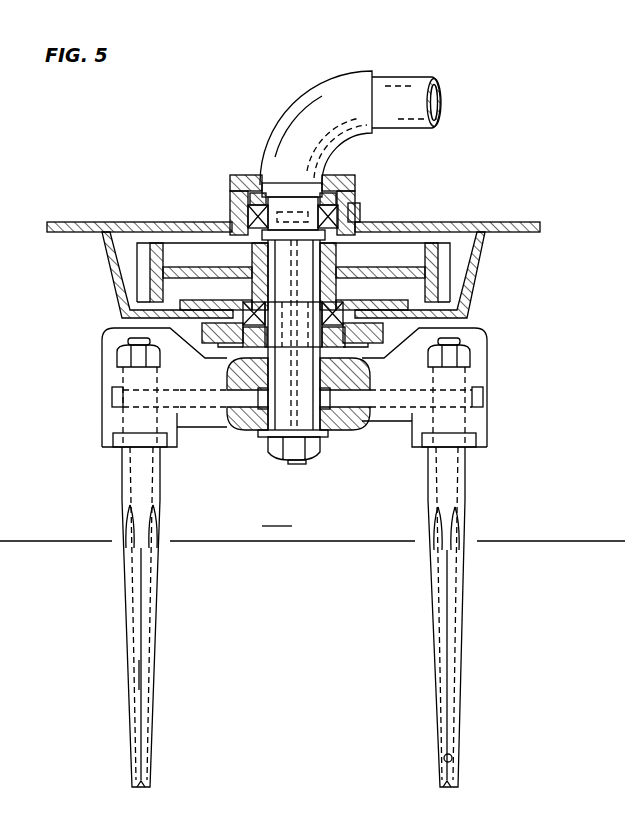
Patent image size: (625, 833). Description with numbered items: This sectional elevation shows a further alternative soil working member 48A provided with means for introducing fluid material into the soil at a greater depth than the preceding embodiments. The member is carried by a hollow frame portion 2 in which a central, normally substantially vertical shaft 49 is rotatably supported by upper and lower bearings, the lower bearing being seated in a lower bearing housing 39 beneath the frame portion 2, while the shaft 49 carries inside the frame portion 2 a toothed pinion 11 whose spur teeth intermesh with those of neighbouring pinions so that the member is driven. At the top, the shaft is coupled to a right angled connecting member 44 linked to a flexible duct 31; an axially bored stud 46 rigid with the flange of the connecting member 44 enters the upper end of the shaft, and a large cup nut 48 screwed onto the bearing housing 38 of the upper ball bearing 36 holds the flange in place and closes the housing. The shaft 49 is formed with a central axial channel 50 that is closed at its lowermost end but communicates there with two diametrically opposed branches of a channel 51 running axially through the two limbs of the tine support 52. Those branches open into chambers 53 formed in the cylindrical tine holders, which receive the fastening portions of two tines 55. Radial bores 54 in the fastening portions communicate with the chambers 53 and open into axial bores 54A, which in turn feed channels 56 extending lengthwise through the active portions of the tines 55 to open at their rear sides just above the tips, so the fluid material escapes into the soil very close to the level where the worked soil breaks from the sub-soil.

The frame portion 2 is at (473, 303).
The toothed pinion 11 is at (137, 270).
The flexible duct 31 is at (433, 82).
The upper ball bearing 36 is at (360, 214).
The bearing housing 38 is at (229, 215).
The lower bearing housing 39 is at (212, 338).
The right angled connecting member 44 is at (320, 74).
The axially bored stud 46 is at (287, 186).
The cup nut 48 is at (350, 183).
The soil working member 48A is at (283, 515).
The shaft 49 is at (337, 269).
The central axial channel 50 is at (338, 301).
The channel 51 is at (358, 432).
The tine support 52 is at (227, 432).
The chamber 53 is at (112, 396).
The radial bore 54 is at (112, 418).
The axial bore 54A is at (130, 405).
The tine 55 is at (122, 505).
The channel 56 is at (150, 678).